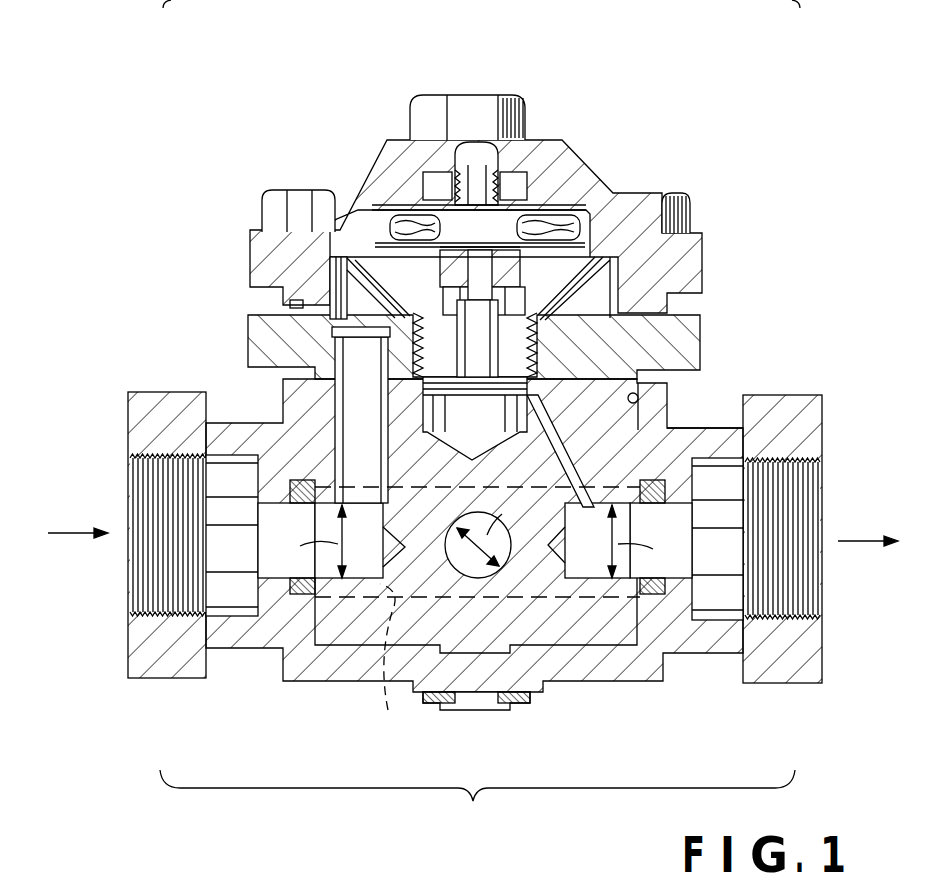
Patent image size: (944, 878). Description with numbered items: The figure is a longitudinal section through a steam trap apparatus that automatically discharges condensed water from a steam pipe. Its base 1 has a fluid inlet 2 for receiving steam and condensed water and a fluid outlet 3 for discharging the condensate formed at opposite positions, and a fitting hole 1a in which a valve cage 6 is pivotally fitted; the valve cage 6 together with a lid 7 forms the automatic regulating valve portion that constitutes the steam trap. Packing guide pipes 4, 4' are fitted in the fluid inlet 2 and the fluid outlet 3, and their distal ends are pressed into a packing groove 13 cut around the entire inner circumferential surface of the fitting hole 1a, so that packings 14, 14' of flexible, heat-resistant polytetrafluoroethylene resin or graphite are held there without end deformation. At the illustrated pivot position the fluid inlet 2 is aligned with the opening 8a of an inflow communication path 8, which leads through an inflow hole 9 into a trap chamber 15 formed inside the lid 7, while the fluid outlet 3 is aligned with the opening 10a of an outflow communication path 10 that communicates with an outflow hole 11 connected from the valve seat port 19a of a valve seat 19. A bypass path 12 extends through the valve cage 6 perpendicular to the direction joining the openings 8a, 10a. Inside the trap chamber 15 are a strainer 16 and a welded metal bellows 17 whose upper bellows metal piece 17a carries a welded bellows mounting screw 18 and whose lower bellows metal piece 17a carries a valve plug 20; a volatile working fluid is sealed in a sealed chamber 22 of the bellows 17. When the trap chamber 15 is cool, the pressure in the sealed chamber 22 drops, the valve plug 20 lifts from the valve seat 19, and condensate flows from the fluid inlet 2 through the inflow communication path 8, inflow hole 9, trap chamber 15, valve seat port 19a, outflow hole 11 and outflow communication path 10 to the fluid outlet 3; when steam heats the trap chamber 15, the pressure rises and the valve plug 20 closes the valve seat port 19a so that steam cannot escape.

The base 1 is at (473, 451).
The fitting hole 1a is at (640, 398).
The fluid inlet 2 is at (205, 508).
The fluid outlet 3 is at (707, 655).
The packing guide pipe 4 is at (176, 535).
The packing guide pipe 4' is at (772, 539).
The valve cage 6 is at (265, 348).
The lid 7 is at (264, 250).
The inflow communication path 8 is at (358, 553).
The opening 8a is at (322, 580).
The inflow hole 9 is at (366, 404).
The outflow communication path 10 is at (595, 555).
The opening 10a is at (633, 565).
The outflow hole 11 is at (705, 409).
The bypass path 12 is at (470, 583).
The packing groove 13 is at (485, 568).
The packing 14 is at (302, 610).
The packing 14' is at (669, 606).
The trap chamber 15 is at (330, 293).
The strainer 16 is at (583, 288).
The welded metal bellows 17 is at (590, 225).
The bellows metal piece 17a is at (542, 205).
The bellows mounting screw 18 is at (540, 203).
The valve seat 19 is at (360, 265).
The valve seat port 19a is at (469, 392).
The valve plug 20 is at (443, 228).
The sealed chamber 22 is at (408, 192).